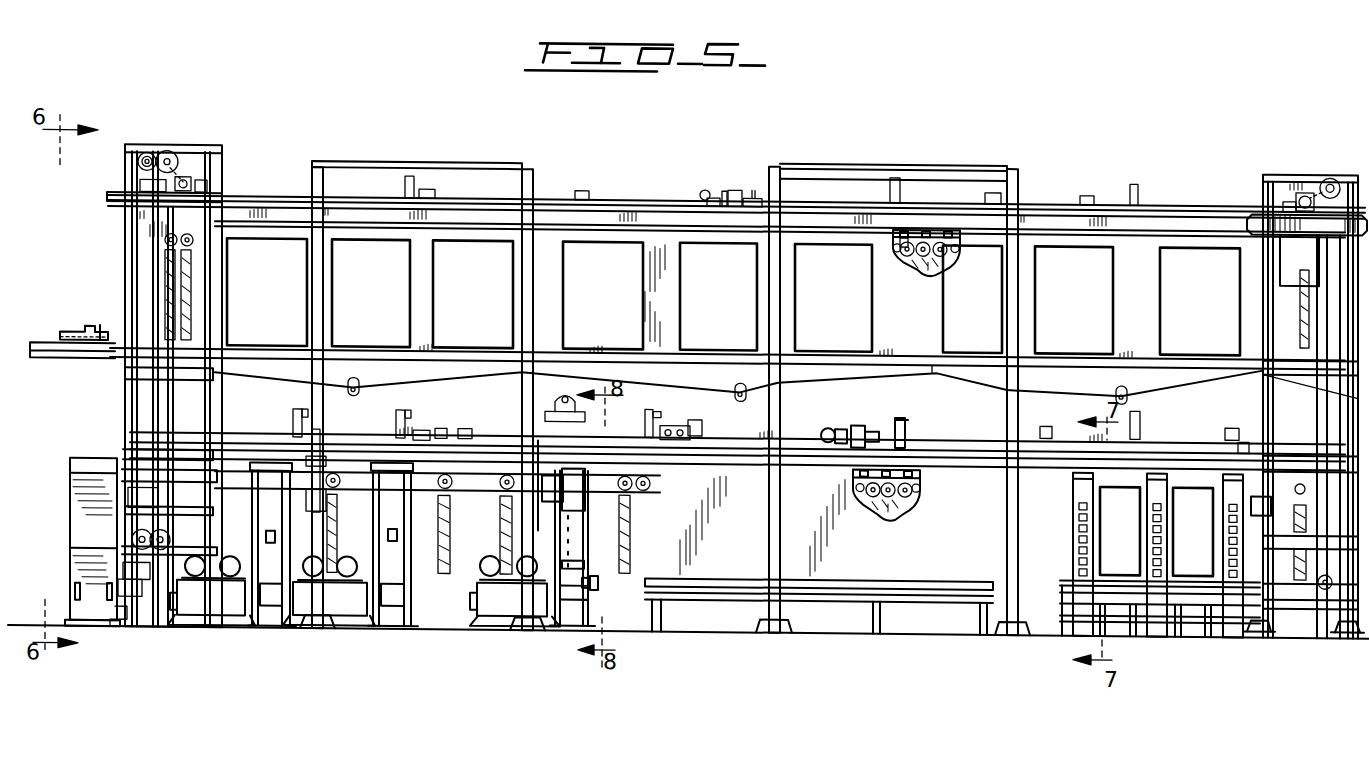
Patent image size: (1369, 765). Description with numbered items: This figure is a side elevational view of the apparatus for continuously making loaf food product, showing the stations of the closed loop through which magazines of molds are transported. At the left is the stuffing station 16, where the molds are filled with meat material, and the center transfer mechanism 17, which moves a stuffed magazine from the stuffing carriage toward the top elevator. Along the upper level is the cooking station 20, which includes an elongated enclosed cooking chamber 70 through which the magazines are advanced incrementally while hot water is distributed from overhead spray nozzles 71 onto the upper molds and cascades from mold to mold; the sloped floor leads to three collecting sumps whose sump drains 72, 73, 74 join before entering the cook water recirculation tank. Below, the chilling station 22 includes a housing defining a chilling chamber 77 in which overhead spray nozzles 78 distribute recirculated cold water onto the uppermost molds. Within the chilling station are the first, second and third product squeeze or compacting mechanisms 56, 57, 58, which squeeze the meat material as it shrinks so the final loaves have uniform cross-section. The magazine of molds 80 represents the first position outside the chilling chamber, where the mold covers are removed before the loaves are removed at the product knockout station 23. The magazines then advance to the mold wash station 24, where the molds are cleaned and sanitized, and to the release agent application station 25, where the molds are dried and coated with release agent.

The stuffing station 16 is at (82, 497).
The center transfer mechanism 17 is at (160, 140).
The cooking station 20 is at (657, 251).
The chilling station 22 is at (912, 562).
The product knockout station 23 is at (561, 630).
The mold wash station 24 is at (392, 604).
The release agent application station 25 is at (270, 604).
The first product squeeze or compacting mechanism 56 is at (1237, 610).
The second product squeeze or compacting mechanism 57 is at (1157, 613).
The third product squeeze or compacting mechanism 58 is at (1082, 620).
The cooking chamber 70 is at (934, 232).
The overhead spray nozzles 71 is at (903, 233).
The sump drain 72 is at (359, 399).
The sump drain 73 is at (741, 402).
The sump drain 74 is at (1128, 395).
The chilling chamber 77 is at (897, 470).
The overhead spray nozzles 78 is at (862, 470).
The magazine of molds 80 is at (623, 581).